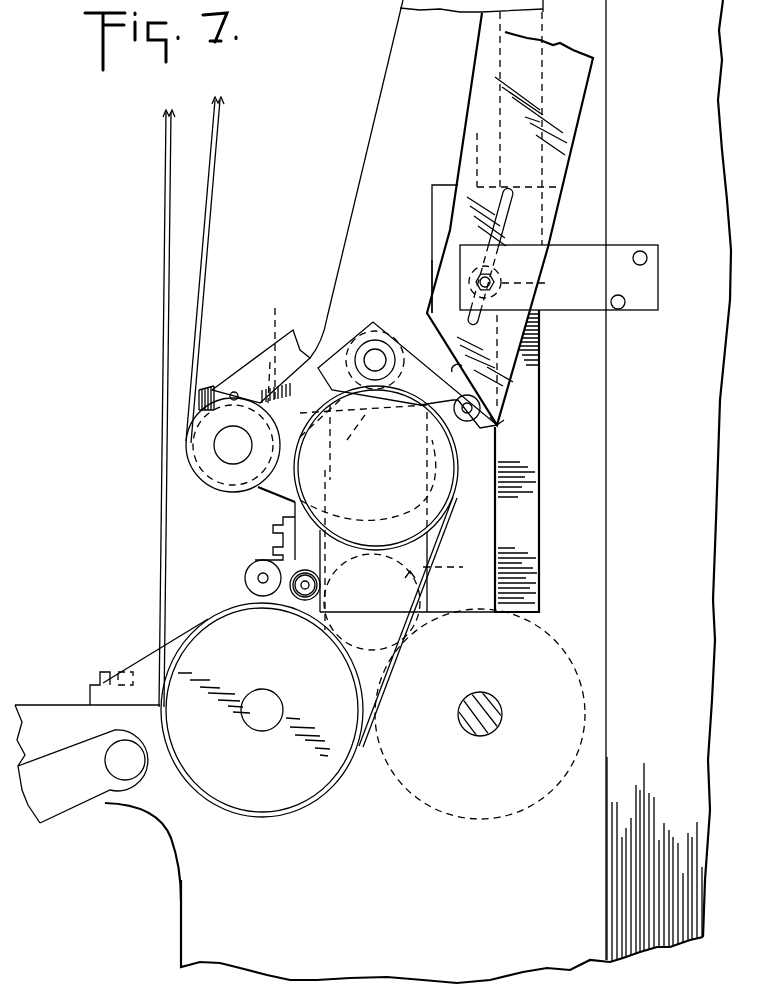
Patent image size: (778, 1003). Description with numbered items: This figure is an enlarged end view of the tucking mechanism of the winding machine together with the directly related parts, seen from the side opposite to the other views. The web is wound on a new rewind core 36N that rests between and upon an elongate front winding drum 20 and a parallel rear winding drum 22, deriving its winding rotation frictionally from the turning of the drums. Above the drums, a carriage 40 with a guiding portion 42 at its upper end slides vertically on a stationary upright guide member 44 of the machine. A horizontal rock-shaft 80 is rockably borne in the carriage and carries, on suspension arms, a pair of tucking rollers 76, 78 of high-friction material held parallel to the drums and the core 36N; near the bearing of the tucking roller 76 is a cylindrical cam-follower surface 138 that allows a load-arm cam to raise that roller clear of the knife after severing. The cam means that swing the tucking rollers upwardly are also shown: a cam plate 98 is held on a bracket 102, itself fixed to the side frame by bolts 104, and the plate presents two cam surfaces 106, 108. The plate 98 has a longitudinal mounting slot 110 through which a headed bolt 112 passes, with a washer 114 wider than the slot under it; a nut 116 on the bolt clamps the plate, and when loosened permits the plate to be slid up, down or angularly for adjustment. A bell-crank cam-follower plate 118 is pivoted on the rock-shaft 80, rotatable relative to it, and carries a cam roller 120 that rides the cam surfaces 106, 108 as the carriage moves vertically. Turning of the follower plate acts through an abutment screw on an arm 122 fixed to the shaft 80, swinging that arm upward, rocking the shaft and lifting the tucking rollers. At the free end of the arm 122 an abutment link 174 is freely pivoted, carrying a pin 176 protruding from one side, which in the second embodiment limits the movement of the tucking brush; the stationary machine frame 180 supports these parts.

The front winding drum 20 is at (200, 621).
The rear winding drum 22 is at (502, 815).
The new rewind core 36N is at (394, 566).
The carriage 40 is at (381, 107).
The guiding portion 42 is at (552, 27).
The upright guide member 44 is at (492, 122).
The tucking roller 76 is at (290, 585).
The tucking roller 78 is at (250, 566).
The rock-shaft 80 is at (373, 360).
The cam plate 98 is at (440, 290).
The bracket 102 is at (577, 260).
The bolts 104 is at (648, 258).
The cam surface 106 is at (442, 237).
The cam surface 108 is at (497, 422).
The mounting slot 110 is at (507, 210).
The headed bolt 112 is at (496, 277).
The washer 114 is at (541, 286).
The nut 116 is at (530, 336).
The cam-follower plate 118 is at (418, 358).
The cam roller 120 is at (499, 428).
The arm 122 is at (209, 386).
The cylindrical cam-follower surface 138 is at (300, 600).
The abutment link 174 is at (260, 353).
The pin 176 is at (281, 345).
The frame 180 is at (593, 512).